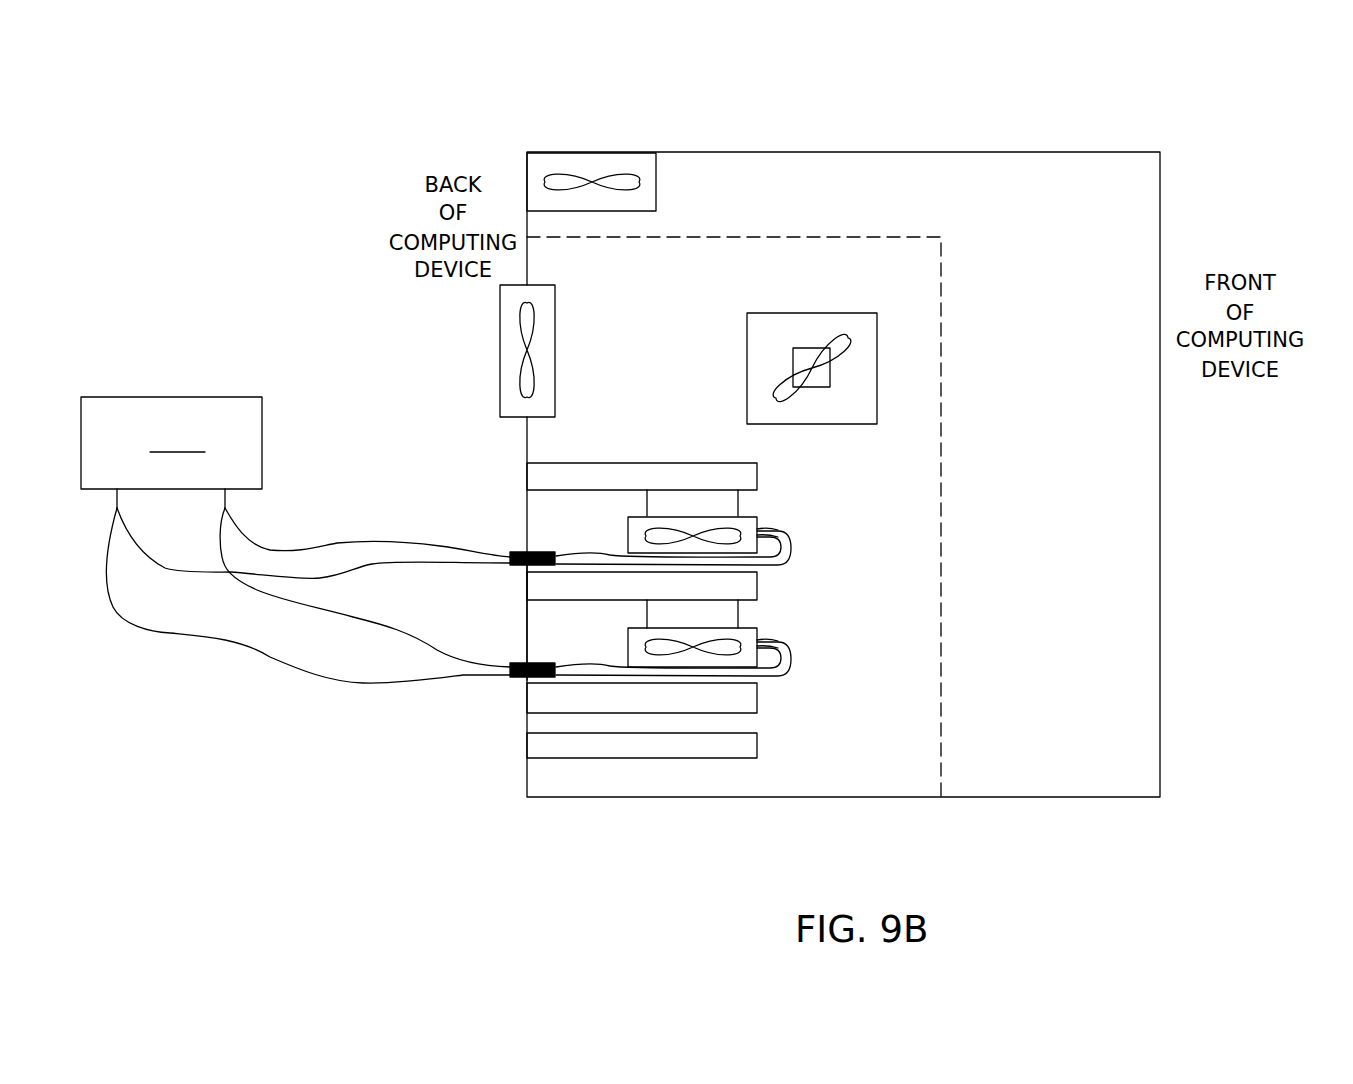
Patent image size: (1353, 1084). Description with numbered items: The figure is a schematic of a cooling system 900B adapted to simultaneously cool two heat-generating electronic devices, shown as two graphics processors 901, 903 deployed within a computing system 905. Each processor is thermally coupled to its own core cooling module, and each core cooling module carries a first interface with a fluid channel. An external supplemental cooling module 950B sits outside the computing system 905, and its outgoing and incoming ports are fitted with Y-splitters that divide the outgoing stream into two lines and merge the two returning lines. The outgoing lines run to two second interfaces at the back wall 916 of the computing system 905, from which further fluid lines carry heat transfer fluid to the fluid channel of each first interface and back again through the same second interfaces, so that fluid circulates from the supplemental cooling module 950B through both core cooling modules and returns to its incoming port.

The cooling system 900B is at (330, 202).
The computing system 905 is at (1032, 152).
The external supplemental cooling module 950B is at (171, 443).
The back panel of computing device 916 is at (489, 688).
The graphics processor 901 is at (687, 505).
The graphics processor 903 is at (693, 615).